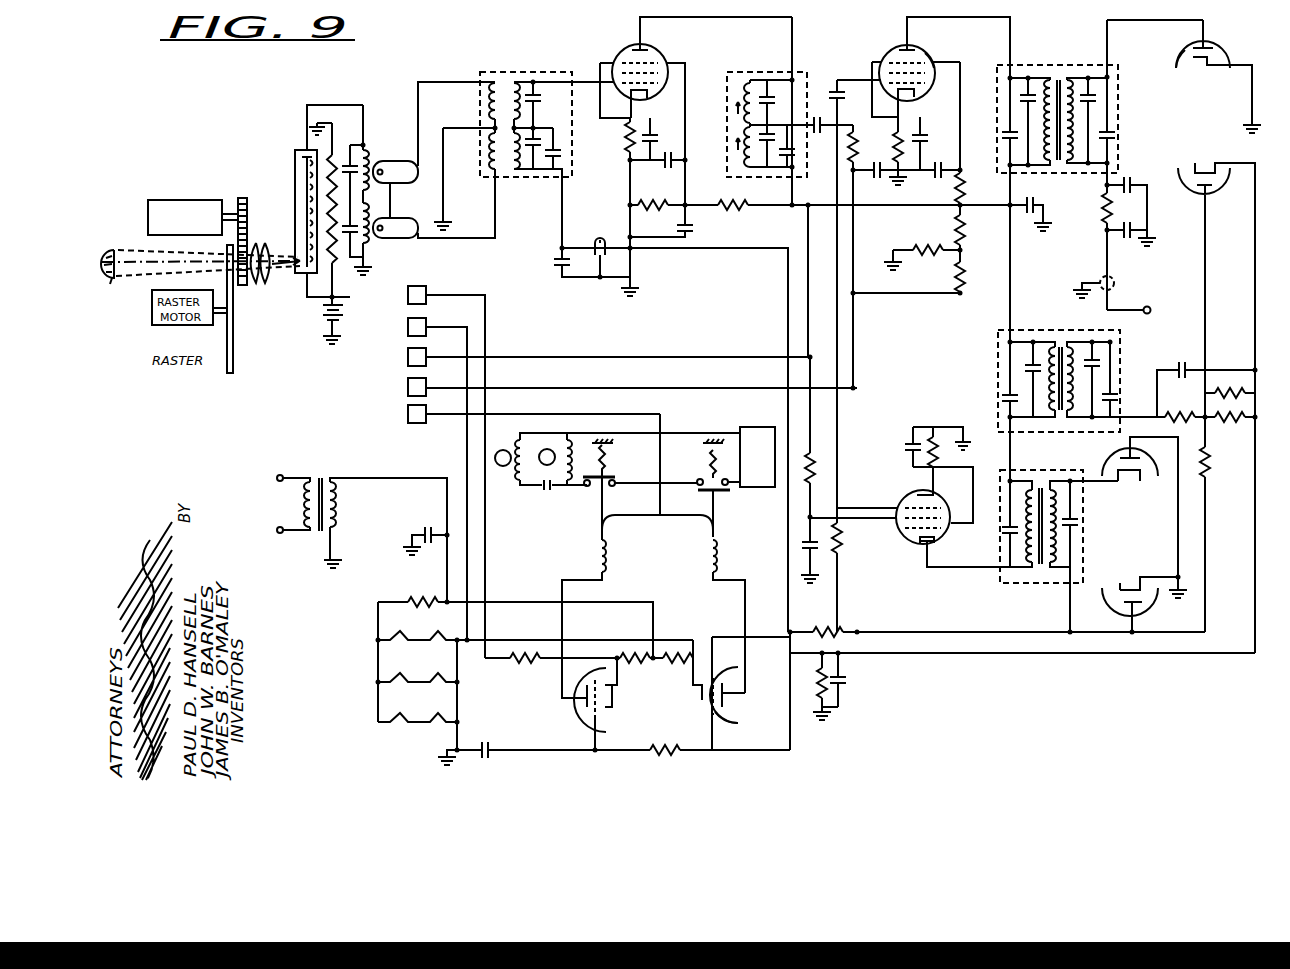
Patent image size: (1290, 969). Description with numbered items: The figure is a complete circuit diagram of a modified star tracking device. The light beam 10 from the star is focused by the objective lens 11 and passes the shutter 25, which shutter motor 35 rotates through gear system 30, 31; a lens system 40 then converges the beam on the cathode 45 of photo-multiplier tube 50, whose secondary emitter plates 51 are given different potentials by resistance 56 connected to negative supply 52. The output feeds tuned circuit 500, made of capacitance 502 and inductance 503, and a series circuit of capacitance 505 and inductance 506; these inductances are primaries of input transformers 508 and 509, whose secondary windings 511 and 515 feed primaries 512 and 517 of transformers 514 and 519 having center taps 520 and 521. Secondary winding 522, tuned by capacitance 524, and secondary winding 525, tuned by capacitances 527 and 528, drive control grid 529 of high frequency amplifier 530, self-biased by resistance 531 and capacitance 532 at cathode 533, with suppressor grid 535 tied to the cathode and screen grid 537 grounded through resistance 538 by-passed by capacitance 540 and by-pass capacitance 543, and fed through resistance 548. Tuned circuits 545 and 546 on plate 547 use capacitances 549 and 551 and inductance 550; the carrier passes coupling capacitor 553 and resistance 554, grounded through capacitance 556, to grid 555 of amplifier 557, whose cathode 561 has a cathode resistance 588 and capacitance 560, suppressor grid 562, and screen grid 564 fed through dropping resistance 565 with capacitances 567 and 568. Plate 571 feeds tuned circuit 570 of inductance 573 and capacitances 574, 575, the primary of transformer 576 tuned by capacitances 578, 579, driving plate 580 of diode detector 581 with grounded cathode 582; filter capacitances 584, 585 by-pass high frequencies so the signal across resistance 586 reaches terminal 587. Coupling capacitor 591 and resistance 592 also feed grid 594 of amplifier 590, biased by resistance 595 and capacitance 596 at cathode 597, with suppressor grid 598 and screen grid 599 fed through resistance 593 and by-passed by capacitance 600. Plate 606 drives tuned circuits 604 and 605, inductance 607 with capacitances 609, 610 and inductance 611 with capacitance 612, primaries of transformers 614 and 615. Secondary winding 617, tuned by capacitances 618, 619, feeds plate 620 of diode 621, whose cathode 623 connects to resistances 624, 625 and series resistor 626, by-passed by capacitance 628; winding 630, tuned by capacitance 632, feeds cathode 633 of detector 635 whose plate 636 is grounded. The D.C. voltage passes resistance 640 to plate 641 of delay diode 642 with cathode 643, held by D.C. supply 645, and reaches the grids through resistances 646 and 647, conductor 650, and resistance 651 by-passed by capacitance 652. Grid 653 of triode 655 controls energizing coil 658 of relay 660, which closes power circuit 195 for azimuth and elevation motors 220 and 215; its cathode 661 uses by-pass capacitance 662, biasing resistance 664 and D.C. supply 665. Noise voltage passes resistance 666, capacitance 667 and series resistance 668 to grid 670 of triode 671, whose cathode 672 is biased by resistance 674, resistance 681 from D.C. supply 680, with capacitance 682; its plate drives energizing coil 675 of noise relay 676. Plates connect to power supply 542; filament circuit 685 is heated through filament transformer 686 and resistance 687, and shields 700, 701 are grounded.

The light beam 10 is at (133, 244).
The objective lens 11 is at (111, 280).
The shutter 25 is at (254, 248).
The gear system 30 is at (247, 208).
The gear system 31 is at (233, 286).
The shutter motor 35 is at (198, 198).
The lens system 40 is at (266, 284).
The cathode 45 is at (299, 266).
The photo-multiplier tube 50 is at (295, 166).
The secondary emitter plates 51 is at (308, 246).
The negative supply 52 is at (348, 314).
The resistance 56 is at (340, 202).
The power circuit 195 is at (770, 465).
The elevation motor 215 is at (549, 449).
The azimuth motor 220 is at (503, 466).
The tuned circuit 500 is at (368, 130).
The capacitance 502 is at (350, 145).
The inductance 503 is at (370, 150).
The capacitance 505 is at (350, 262).
The inductance 506 is at (372, 207).
The input transformer 508 is at (371, 160).
The input transformer 509 is at (424, 240).
The secondary winding 511 is at (384, 172).
The primary 512 is at (465, 74).
The second transformer 514 is at (497, 76).
The secondary 515 is at (384, 228).
The primary 517 is at (491, 150).
The transformer 519 is at (496, 172).
The center tap 520 is at (492, 126).
The center tap 521 is at (537, 136).
The secondary winding 522 is at (520, 80).
The capacitance 524 is at (547, 105).
The secondary winding 525 is at (524, 171).
The capacitance 527 is at (557, 130).
The capacitance 528 is at (562, 166).
The control grid 529 is at (615, 91).
The high frequency amplifier 530 is at (613, 54).
The resistance 531 is at (625, 148).
The capacitance 532 is at (663, 138).
The cathode 533 is at (648, 97).
The suppressor grid 535 is at (661, 62).
The screen grid 537 is at (669, 66).
The resistance 538 is at (651, 209).
The capacitance 540 is at (667, 169).
The power supply 542 is at (408, 419).
The by-pass capacitance 543 is at (694, 228).
The tuned circuit 545 is at (753, 78).
The tuned circuit 546 is at (756, 169).
The plate 547 is at (637, 46).
The resistance 548 is at (748, 210).
The capacitance 549 is at (780, 137).
The inductance 550 is at (740, 150).
The capacitance 551 is at (797, 154).
The coupling capacitor 553 is at (818, 115).
The resistance 554 is at (869, 257).
The grid 555 is at (916, 89).
The capacitance 556 is at (880, 158).
The high frequency amplifier 557 is at (940, 50).
The capacitance 560 is at (928, 141).
The cathode 561 is at (914, 96).
The suppressor grid 562 is at (894, 51).
The screen grid 564 is at (936, 65).
The dropping resistance 565 is at (967, 189).
The capacitance 567 is at (1049, 199).
The capacitance 568 is at (937, 179).
The tuned circuit 570 is at (1026, 74).
The plate 571 is at (917, 49).
The inductance 573 is at (1043, 140).
The capacitance 574 is at (1020, 101).
The capacitance 575 is at (1002, 134).
The transformer 576 is at (1059, 66).
The capacitance 578 is at (1100, 103).
The capacitance 579 is at (1118, 131).
The plate 580 is at (1210, 45).
The diode detector 581 is at (1182, 41).
The cathode 582 is at (1196, 67).
The filter capacitance 584 is at (1133, 180).
The filter capacitance 585 is at (1121, 244).
The resistance 586 is at (1102, 211).
The terminal 587 is at (1151, 309).
The cathode resistor 588 is at (906, 140).
The high frequency amplifier 590 is at (915, 563).
The coupling capacitor 591 is at (843, 78).
The resistance 592 is at (845, 546).
The resistance 593 is at (803, 483).
The grid 594 is at (939, 503).
The resistance 595 is at (941, 453).
The capacitance 596 is at (905, 454).
The cathode 597 is at (917, 496).
The suppressor grid 598 is at (740, 103).
The screen grid 599 is at (906, 509).
The capacitance 600 is at (801, 546).
The tuned circuit 604 is at (1022, 352).
The tuned circuit 605 is at (1030, 568).
The plate 606 is at (930, 560).
The inductance 607 is at (1050, 412).
The capacitance 609 is at (1024, 361).
The capacitance 610 is at (1002, 398).
The inductance 611 is at (1031, 487).
The capacitance 612 is at (1003, 545).
The transformer 614 is at (1069, 412).
The noise transformer 615 is at (1044, 570).
The secondary winding 617 is at (1076, 347).
The capacitance 618 is at (1101, 359).
The capacitance 619 is at (1119, 393).
The plate 620 is at (1200, 193).
The diode 621 is at (1219, 191).
The cathode 623 is at (1208, 158).
The resistance 624 is at (1237, 385).
The resistance 625 is at (1236, 426).
The series resistor 626 is at (1196, 408).
The capacitance 628 is at (1181, 365).
The winding 630 is at (1060, 546).
The capacitance 632 is at (1079, 521).
The cathode 633 is at (1133, 481).
The detector 635 is at (1112, 462).
The plate 636 is at (1140, 463).
The resistance 640 is at (1212, 473).
The plate 641 is at (1150, 601).
The delay diode 642 is at (1108, 600).
The cathode 643 is at (1127, 577).
The D.C. supply 645 is at (967, 273).
The resistance 646 is at (967, 231).
The resistance 647 is at (931, 235).
The conductor 650 is at (855, 257).
The resistance 651 is at (847, 625).
The capacitance 652 is at (554, 263).
The grid 653 is at (719, 716).
The triode 655 is at (736, 712).
The energizing coil 658 is at (722, 566).
The relay 660 is at (727, 525).
The cathode 661 is at (696, 704).
The by-pass capacitance 662 is at (432, 517).
The biasing resistance 664 is at (674, 652).
The D.C. supply 665 is at (399, 329).
The resistance 666 is at (817, 703).
The capacitance 667 is at (848, 681).
The series resistance 668 is at (666, 758).
The grid 670 is at (601, 719).
The triode 671 is at (585, 713).
The cathode 672 is at (619, 703).
The resistance 674 is at (636, 664).
The energizing coil 675 is at (596, 556).
The noise relay 676 is at (600, 514).
The D.C. supply 680 is at (408, 297).
The resistance 681 is at (523, 667).
The capacitance 682 is at (491, 753).
The filament circuit 685 is at (369, 660).
The filament transformer 686 is at (311, 540).
The resistance 687 is at (427, 592).
The shield 700 is at (612, 226).
The shield 701 is at (1100, 280).